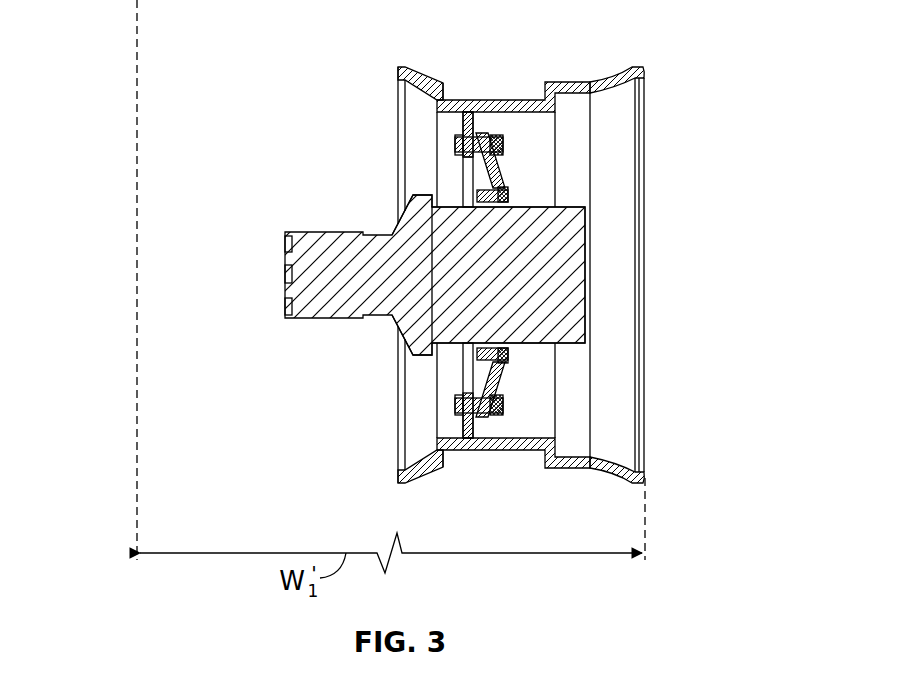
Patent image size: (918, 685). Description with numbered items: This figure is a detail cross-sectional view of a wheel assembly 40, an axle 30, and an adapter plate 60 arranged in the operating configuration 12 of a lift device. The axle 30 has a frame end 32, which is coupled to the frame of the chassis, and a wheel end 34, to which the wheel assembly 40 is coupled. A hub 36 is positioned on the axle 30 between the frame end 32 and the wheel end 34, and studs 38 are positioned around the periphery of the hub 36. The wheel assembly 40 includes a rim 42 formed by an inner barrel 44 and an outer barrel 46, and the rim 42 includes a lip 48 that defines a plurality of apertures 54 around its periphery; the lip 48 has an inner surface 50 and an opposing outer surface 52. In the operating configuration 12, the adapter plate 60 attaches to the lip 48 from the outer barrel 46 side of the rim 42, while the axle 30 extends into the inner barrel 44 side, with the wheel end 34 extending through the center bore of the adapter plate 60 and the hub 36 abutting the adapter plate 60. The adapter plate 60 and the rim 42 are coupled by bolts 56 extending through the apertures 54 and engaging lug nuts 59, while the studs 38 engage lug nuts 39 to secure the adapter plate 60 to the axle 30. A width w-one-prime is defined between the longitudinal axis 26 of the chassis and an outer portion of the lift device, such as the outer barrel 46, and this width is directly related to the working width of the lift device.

The operating configuration 12 is at (458, 456).
The longitudinal axis 26 is at (135, 88).
The axle 30 is at (306, 202).
The frame end 32 is at (275, 226).
The wheel end 34 is at (600, 244).
The hub 36 is at (470, 348).
The studs 38 is at (516, 347).
The lug nuts 39 is at (503, 358).
The wheel assembly 40 is at (590, 52).
The rim 42 is at (565, 463).
The inner barrel 44 is at (392, 80).
The outer barrel 46 is at (653, 67).
The lip 48 is at (470, 110).
The inner surface 50 is at (460, 128).
The outer surface 52 is at (484, 124).
The apertures 54 is at (470, 416).
The bolts 56 is at (455, 404).
The lug nuts 59 is at (492, 418).
The adapter plate 60 is at (503, 170).